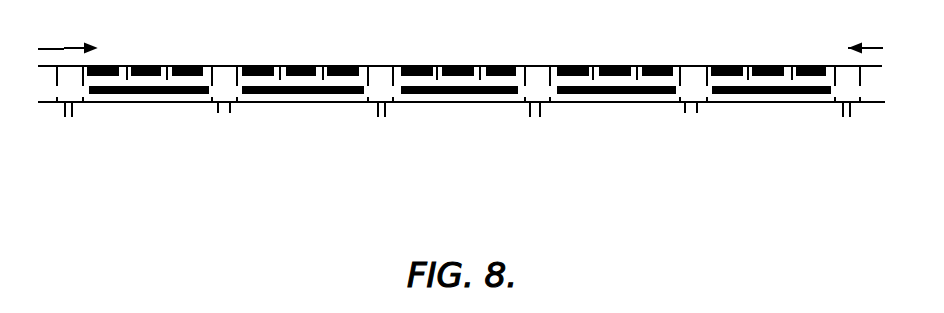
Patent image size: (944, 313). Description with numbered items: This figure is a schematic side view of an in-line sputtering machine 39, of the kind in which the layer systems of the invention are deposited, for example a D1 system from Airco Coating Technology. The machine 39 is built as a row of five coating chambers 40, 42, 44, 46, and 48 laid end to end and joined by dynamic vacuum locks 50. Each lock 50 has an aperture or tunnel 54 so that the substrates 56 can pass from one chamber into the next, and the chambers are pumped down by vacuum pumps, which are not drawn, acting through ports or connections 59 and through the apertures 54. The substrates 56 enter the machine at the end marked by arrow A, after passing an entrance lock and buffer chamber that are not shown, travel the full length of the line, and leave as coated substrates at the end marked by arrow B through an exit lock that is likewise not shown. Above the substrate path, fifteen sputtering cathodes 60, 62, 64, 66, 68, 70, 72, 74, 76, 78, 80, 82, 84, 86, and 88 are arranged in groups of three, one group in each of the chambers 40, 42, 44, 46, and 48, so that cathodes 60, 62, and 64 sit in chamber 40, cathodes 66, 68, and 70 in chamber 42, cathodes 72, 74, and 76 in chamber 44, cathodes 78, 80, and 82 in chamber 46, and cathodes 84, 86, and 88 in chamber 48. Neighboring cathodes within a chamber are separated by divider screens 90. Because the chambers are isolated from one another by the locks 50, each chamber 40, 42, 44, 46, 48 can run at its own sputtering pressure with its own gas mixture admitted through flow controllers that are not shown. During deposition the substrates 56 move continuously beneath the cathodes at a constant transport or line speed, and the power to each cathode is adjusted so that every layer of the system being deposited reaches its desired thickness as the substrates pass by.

The machine 39 is at (417, 168).
The coating chamber 40 is at (138, 97).
The coating chamber 42 is at (305, 97).
The coating chamber 44 is at (503, 97).
The coating chamber 46 is at (573, 97).
The coating chamber 48 is at (758, 97).
The dynamic vacuum lock 50 is at (227, 77).
The aperture 54 is at (230, 104).
The substrate 56 is at (104, 95).
The port 59 is at (383, 104).
The sputtering cathode 60 is at (105, 66).
The sputtering cathode 62 is at (147, 66).
The sputtering cathode 64 is at (188, 66).
The sputtering cathode 66 is at (266, 66).
The sputtering cathode 68 is at (305, 66).
The sputtering cathode 70 is at (348, 66).
The sputtering cathode 72 is at (418, 66).
The sputtering cathode 74 is at (458, 66).
The sputtering cathode 76 is at (497, 66).
The sputtering cathode 78 is at (573, 66).
The sputtering cathode 80 is at (605, 66).
The sputtering cathode 82 is at (645, 66).
The sputtering cathode 84 is at (727, 66).
The sputtering cathode 86 is at (763, 66).
The sputtering cathode 88 is at (805, 66).
The divider screen 90 is at (170, 76).